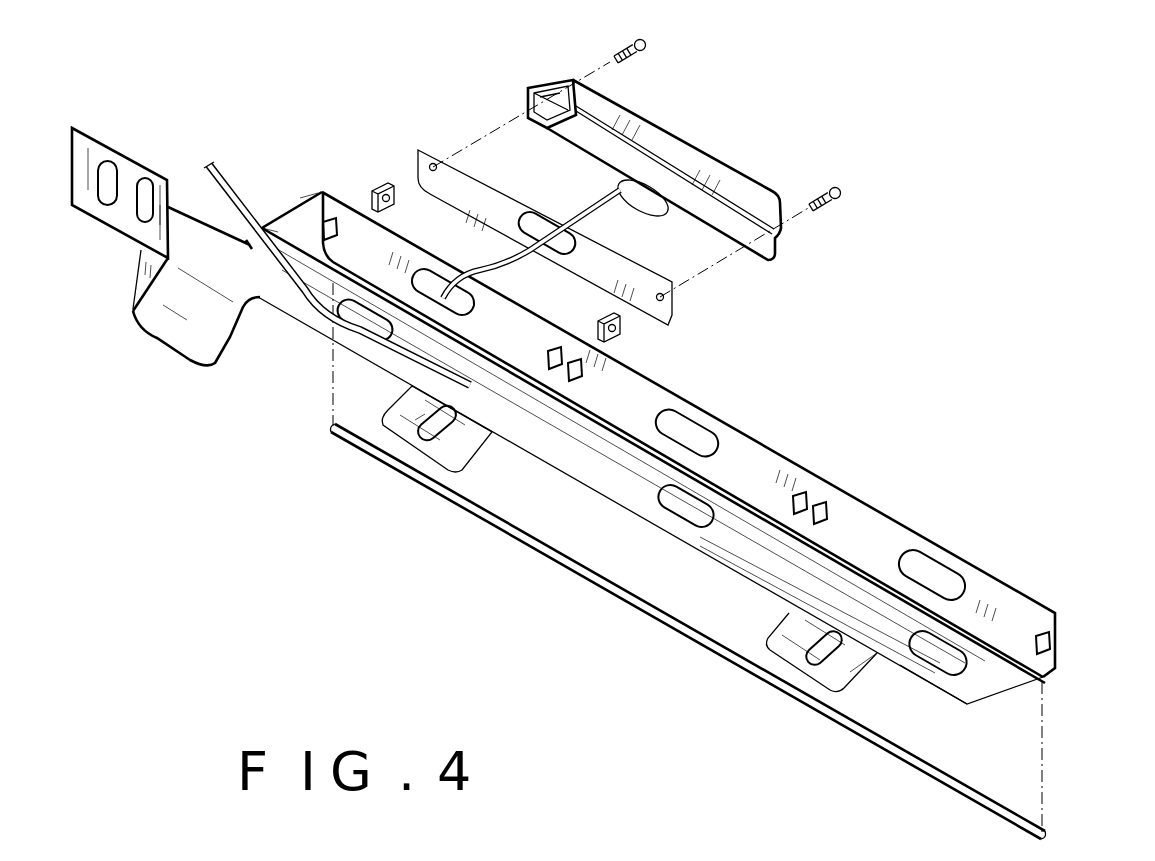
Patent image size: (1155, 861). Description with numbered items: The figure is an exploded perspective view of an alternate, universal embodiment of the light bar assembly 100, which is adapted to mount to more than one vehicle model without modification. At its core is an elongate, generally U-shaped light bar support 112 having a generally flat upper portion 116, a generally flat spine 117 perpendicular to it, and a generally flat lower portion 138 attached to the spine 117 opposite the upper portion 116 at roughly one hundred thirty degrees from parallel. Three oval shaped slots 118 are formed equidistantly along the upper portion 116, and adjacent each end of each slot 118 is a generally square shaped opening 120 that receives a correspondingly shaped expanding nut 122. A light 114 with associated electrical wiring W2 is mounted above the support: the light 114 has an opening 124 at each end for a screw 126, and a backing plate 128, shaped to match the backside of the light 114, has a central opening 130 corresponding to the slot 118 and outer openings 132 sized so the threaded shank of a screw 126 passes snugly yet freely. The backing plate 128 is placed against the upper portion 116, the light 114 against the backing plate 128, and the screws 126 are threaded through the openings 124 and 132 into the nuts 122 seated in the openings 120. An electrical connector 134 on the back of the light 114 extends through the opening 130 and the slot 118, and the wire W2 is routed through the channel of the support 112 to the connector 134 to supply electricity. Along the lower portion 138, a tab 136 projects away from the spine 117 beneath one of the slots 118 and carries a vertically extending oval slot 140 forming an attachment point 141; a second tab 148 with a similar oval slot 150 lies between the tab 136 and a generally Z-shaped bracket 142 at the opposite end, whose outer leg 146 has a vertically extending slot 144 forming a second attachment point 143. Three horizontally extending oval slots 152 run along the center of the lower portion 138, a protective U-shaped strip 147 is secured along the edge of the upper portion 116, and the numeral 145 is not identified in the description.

The light bar assembly 100 is at (1021, 473).
The light bar support 112 is at (283, 205).
The light 114 is at (680, 133).
The upper portion 116 is at (862, 526).
The spine 117 is at (303, 212).
The oval shaped slot 118 is at (382, 342).
The square shaped opening 120 is at (328, 220).
The expanding nut 122 is at (396, 206).
The opening 124 is at (530, 92).
The screw 126 is at (608, 45).
The backing plate 128 is at (668, 318).
The central opening 130 is at (576, 268).
The outer opening 132 is at (430, 162).
The electrical connector 134 is at (622, 185).
The electrical wire W2 is at (633, 215).
The tab 136 is at (853, 680).
The lower portion 138 is at (968, 705).
The oval shaped slot 140 is at (823, 627).
The attachment point 141 is at (804, 662).
The Z-shaped bracket 142 is at (173, 347).
The second attachment point 143 is at (126, 158).
The vertically extending slot 144 is at (97, 175).
The tab opening 145 is at (425, 447).
The outer leg 146 is at (105, 230).
The protective U-shaped strip 147 is at (860, 733).
The tab 148 is at (478, 452).
The oval shaped slot 150 is at (417, 423).
The horizontally extending oval shaped slot 152 is at (315, 293).